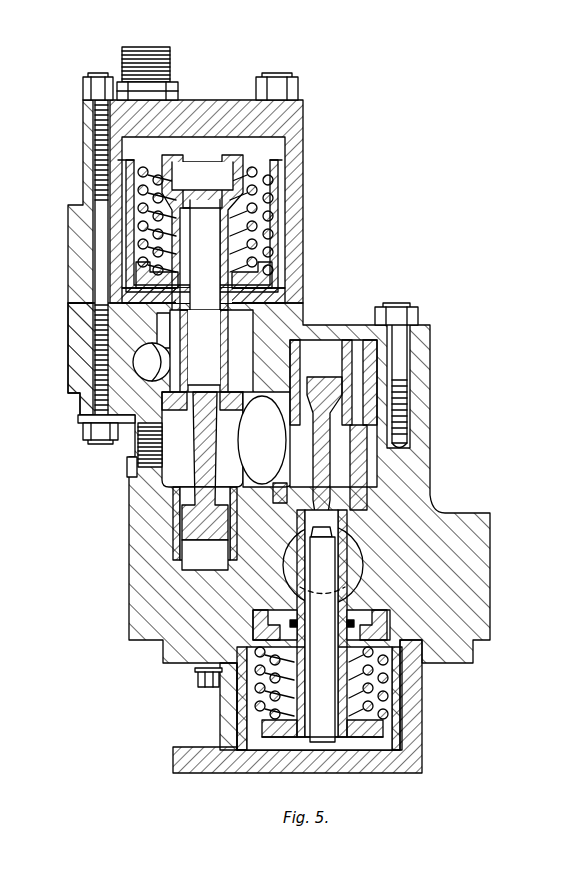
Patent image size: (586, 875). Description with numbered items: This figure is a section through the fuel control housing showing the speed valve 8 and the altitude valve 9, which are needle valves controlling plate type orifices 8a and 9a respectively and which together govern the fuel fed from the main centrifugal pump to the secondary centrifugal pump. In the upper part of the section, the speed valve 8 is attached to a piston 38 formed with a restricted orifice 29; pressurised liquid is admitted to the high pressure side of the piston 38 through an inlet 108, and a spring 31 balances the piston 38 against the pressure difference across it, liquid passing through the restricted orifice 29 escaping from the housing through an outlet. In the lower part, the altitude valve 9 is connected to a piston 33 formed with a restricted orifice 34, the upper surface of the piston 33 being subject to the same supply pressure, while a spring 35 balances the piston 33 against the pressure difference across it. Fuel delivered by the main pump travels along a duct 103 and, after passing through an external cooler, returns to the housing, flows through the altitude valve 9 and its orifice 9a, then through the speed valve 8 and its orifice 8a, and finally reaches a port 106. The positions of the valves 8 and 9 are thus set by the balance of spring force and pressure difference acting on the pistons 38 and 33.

The inlet 108 is at (150, 50).
The piston 38 is at (272, 160).
The restricted orifice 29 is at (172, 207).
The spring 31 is at (270, 217).
The port 106 is at (138, 362).
The speed valve 8 is at (192, 443).
The plate type orifice 8a is at (240, 412).
The altitude valve 9 is at (333, 447).
The plate type orifice 9a is at (335, 515).
The duct 103 is at (452, 569).
The spring 35 is at (240, 705).
The piston 33 is at (395, 697).
The restricted orifice 34 is at (275, 745).